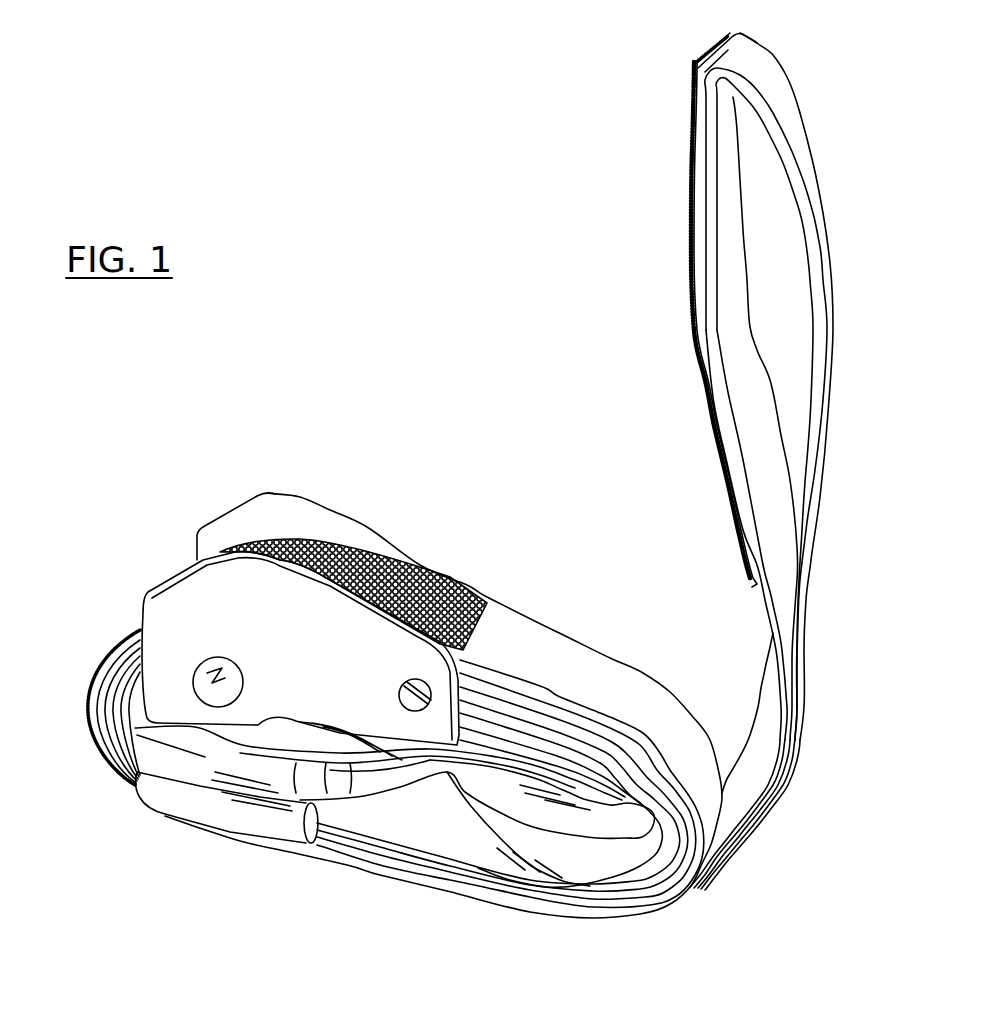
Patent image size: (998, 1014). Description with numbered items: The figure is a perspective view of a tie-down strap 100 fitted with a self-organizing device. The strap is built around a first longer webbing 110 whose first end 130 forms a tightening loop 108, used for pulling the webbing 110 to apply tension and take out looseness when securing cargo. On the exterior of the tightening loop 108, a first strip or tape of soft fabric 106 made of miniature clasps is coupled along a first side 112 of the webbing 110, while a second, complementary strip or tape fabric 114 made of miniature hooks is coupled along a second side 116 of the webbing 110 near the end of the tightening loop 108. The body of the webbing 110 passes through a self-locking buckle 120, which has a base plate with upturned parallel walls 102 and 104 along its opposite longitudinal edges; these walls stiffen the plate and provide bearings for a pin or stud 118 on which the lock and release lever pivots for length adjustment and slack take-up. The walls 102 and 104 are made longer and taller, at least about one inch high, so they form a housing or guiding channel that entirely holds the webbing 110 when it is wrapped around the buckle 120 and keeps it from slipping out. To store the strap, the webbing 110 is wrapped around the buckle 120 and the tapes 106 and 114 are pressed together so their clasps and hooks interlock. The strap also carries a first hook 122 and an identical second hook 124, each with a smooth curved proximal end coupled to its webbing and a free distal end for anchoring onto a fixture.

The tie-down strap 100 is at (365, 308).
The upturned parallel wall 102 is at (290, 513).
The upturned parallel wall 104 is at (362, 702).
The first strip or tape of soft fabric 106 is at (684, 305).
The tightening loop 108 is at (792, 263).
The first longer webbing 110 is at (807, 687).
The first side 112 is at (767, 781).
The second complementary strip or tape fabric 114 is at (467, 588).
The second side 116 is at (630, 704).
The pin or stud 118 is at (207, 680).
The self-locking buckle 120 is at (360, 498).
The first hook 122 is at (183, 771).
The second hook 124 is at (187, 811).
The first end 130 is at (747, 50).